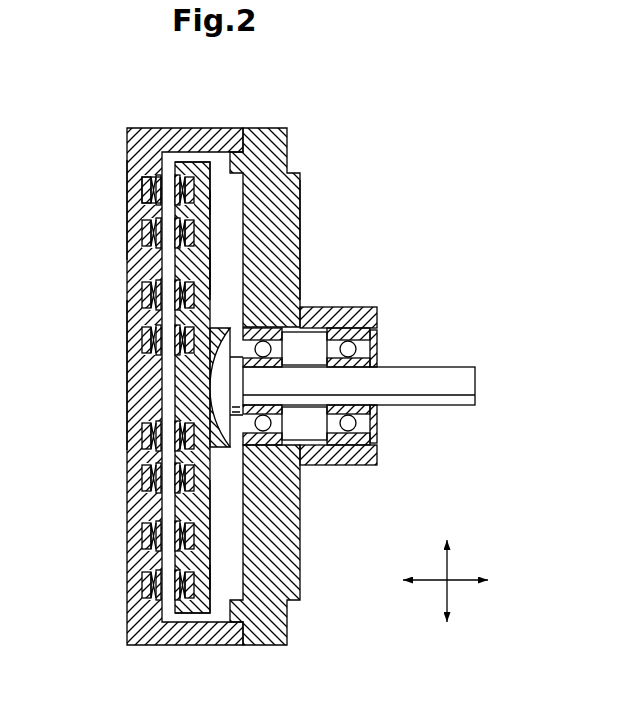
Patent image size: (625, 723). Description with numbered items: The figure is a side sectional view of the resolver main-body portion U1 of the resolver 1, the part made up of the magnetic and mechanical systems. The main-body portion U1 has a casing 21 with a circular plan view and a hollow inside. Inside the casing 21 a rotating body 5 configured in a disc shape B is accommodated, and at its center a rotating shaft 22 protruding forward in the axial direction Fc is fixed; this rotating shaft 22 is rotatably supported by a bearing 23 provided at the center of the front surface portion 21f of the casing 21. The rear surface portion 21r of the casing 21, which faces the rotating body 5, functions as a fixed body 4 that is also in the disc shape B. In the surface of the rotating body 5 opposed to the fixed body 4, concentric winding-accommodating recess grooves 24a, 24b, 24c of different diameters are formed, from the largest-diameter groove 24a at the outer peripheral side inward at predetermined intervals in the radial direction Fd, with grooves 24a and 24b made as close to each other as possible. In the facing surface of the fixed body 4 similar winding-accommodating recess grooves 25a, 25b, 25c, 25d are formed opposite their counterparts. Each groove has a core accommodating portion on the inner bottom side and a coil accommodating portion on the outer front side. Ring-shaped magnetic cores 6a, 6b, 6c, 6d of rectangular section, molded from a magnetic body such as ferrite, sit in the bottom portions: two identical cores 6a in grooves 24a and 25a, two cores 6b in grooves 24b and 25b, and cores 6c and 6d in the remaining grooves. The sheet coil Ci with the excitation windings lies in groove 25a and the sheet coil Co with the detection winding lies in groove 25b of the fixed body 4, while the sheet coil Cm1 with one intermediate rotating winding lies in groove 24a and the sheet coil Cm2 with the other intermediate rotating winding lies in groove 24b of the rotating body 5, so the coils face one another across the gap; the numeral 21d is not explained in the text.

The resolver 1 is at (408, 210).
The resolver main-body portion U1 is at (413, 270).
The fixed body 4 is at (120, 202).
The rotating body 5 is at (213, 502).
The magnetic core 6a is at (153, 598).
The magnetic core 6b is at (142, 533).
The magnetic core 6c is at (210, 283).
The magnetic core 6d is at (141, 328).
The casing 21 is at (125, 608).
The rear surface portion 21r is at (127, 365).
The front surface portion 21f is at (302, 270).
The housing bore 21d is at (210, 462).
The rotating shaft 22 is at (432, 367).
The bearing 23 is at (344, 463).
The winding-accommodating recess groove 24a is at (190, 176).
The winding-accommodating recess groove 24b is at (210, 233).
The winding-accommodating recess groove 24c is at (210, 525).
The winding-accommodating recess groove 25a is at (147, 178).
The winding-accommodating recess groove 25b is at (143, 233).
The winding-accommodating recess groove 25c is at (142, 433).
The winding-accommodating recess groove 25d is at (142, 468).
The sheet coil Ci is at (152, 180).
The sheet coil Co is at (147, 279).
The sheet coil Cm1 is at (181, 178).
The sheet coil Cm2 is at (192, 233).
The disc shape B is at (112, 552).
The axial direction Fc is at (460, 578).
The radial direction Fd is at (450, 592).